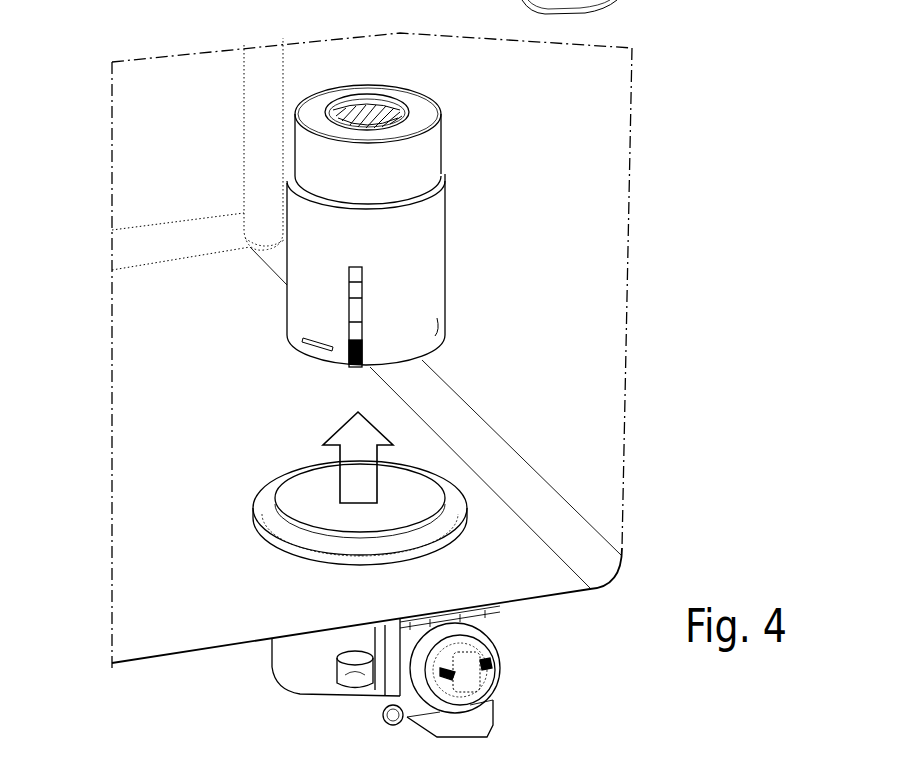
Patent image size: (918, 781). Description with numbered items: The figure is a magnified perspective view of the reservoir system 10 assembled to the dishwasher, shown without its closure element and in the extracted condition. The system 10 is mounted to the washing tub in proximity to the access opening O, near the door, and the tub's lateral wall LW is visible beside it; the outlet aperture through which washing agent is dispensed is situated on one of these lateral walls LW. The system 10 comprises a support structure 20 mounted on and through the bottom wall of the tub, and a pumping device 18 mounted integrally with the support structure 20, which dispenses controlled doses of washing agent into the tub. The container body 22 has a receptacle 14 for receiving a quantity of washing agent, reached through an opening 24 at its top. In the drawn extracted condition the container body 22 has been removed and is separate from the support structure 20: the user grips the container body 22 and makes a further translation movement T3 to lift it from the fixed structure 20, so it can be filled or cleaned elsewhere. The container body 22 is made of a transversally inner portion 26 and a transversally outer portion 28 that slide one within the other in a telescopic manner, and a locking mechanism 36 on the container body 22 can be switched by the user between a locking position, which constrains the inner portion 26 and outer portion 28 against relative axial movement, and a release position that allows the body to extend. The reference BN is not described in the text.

The reservoir system 10 is at (405, 671).
The receptacle 14 is at (370, 118).
The pumping device 18 is at (497, 675).
The support structure 20 is at (254, 522).
The container body 22 is at (410, 184).
The opening 24 is at (392, 107).
The transversally inner portion 26 is at (320, 163).
The transversally outer portion 28 is at (318, 227).
The locking mechanism 36 is at (362, 318).
The body panel BN is at (133, 608).
The lateral wall LW is at (606, 190).
The access opening O is at (623, 135).
The translation movement T3 is at (372, 457).